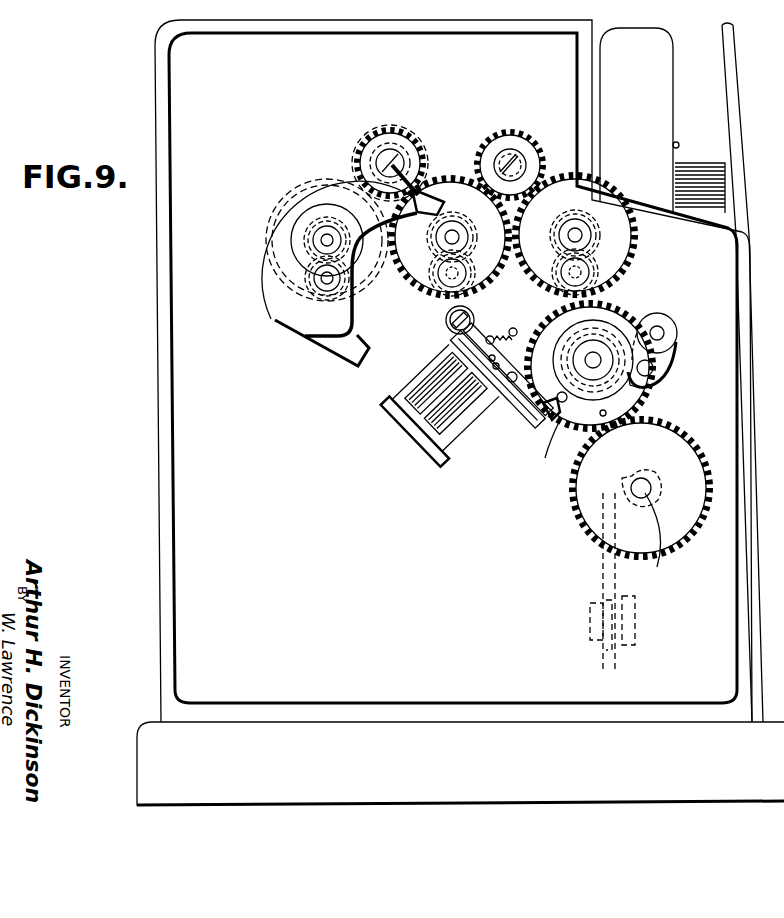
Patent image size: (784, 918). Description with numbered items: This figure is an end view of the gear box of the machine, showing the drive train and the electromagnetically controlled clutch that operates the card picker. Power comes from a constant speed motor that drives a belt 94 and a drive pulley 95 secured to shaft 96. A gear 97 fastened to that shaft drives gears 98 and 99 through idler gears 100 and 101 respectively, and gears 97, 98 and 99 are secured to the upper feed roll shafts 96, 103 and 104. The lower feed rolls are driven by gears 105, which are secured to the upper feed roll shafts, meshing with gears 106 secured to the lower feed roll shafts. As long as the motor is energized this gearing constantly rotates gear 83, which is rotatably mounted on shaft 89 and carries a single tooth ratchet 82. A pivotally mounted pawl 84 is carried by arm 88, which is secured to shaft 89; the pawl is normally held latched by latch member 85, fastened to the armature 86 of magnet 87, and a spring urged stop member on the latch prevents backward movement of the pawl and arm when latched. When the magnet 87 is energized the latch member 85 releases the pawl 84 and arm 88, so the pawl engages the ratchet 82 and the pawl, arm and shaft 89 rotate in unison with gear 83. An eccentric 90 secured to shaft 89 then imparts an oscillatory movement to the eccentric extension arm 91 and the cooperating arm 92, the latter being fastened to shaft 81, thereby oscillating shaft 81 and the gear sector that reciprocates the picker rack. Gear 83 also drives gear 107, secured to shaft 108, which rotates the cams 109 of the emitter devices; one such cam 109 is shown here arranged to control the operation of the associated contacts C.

The shaft 81 is at (664, 338).
The single tooth ratchet 82 is at (622, 337).
The gear 83 is at (612, 312).
The pawl 84 is at (568, 424).
The latch member 85 is at (522, 398).
The armature 86 is at (457, 340).
The magnet 87 is at (437, 385).
The arm 88 is at (545, 447).
The shaft 89 is at (594, 355).
The eccentric 90 is at (567, 356).
The eccentric extension arm 91 is at (650, 388).
The arm 92 is at (660, 367).
The belt 94 is at (347, 357).
The drive pulley 95 is at (272, 172).
The shaft 96 is at (327, 234).
The gear 97 is at (280, 212).
The gear 98 is at (447, 186).
The gear 99 is at (567, 192).
The idler gear 100 is at (397, 136).
The idler gear 101 is at (508, 134).
The upper feed roll shaft 103 is at (455, 234).
The upper feed roll shaft 104 is at (575, 233).
The gears 105 is at (320, 243).
The gears 106 is at (308, 292).
The gear 107 is at (688, 442).
The shaft 108 is at (668, 536).
The cam 109 is at (645, 475).
The contacts C is at (603, 512).